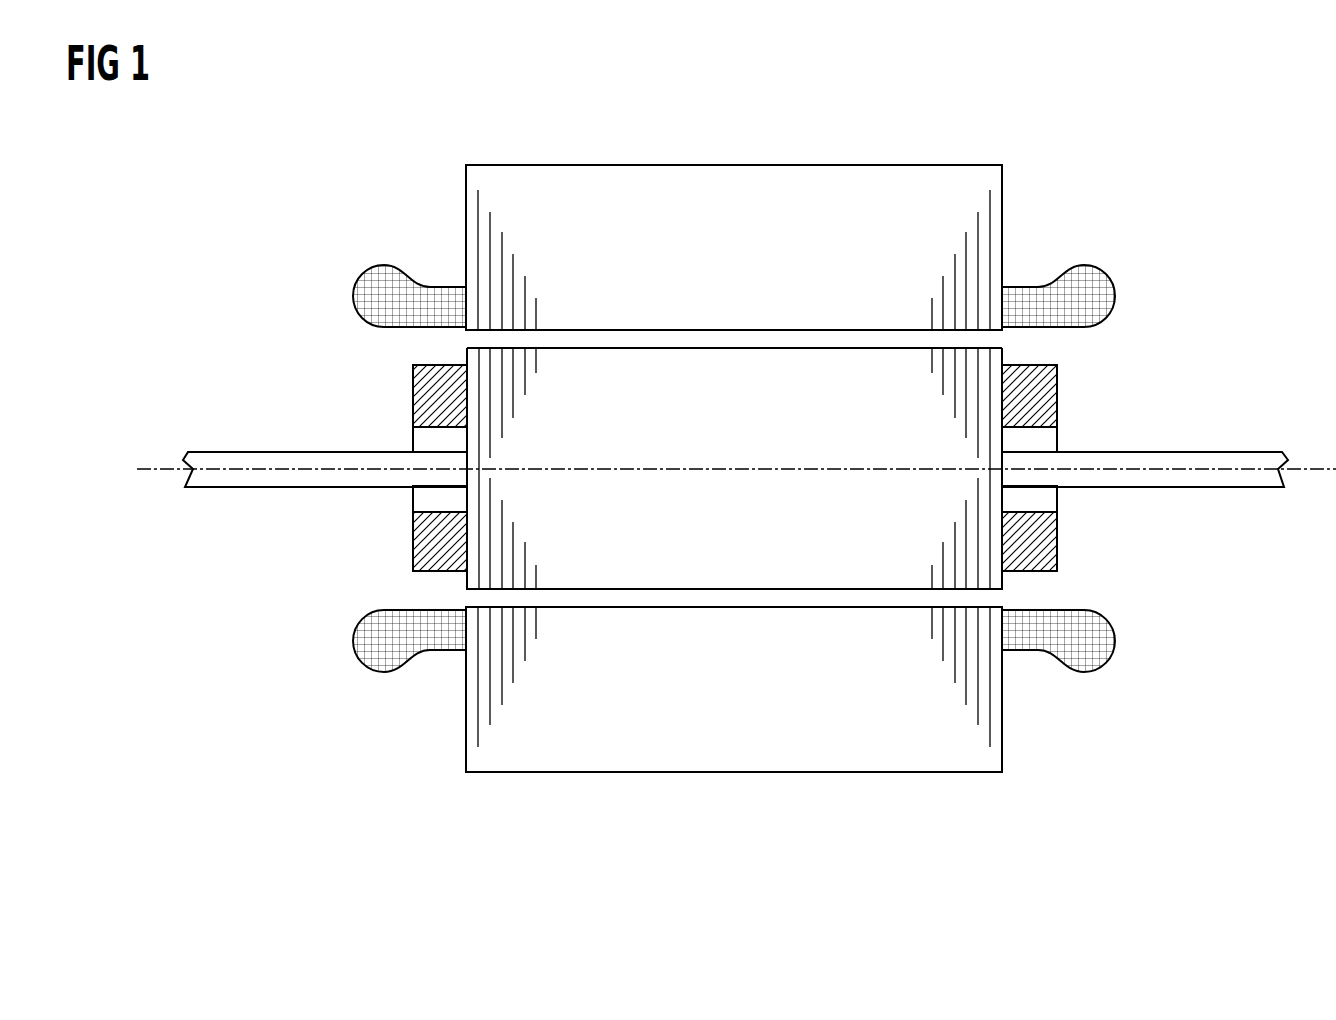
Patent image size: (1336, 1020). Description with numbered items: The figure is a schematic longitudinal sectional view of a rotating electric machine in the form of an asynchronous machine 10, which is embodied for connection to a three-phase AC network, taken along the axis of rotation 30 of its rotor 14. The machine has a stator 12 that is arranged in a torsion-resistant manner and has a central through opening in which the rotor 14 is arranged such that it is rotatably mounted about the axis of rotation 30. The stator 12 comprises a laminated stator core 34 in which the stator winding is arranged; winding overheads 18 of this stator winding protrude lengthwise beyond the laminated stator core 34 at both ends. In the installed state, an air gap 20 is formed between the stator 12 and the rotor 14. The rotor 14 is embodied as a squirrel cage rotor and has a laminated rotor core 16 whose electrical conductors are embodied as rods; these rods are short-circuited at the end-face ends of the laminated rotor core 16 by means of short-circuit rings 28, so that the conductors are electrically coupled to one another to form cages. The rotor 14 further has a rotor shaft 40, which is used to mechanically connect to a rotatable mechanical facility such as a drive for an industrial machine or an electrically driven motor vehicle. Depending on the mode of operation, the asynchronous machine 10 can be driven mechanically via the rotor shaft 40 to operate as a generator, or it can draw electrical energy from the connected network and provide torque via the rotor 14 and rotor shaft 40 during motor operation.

The asynchronous machine 10 is at (995, 122).
The stator 12 is at (437, 236).
The rotor 14 is at (1172, 416).
The laminated rotor core 16 is at (791, 573).
The winding overheads 18 is at (1122, 293).
The air gap 20 is at (978, 341).
The short-circuit rings 28 is at (420, 402).
The axis of rotation 30 is at (1312, 470).
The laminated stator core 34 is at (580, 185).
The rotor shaft 40 is at (212, 458).